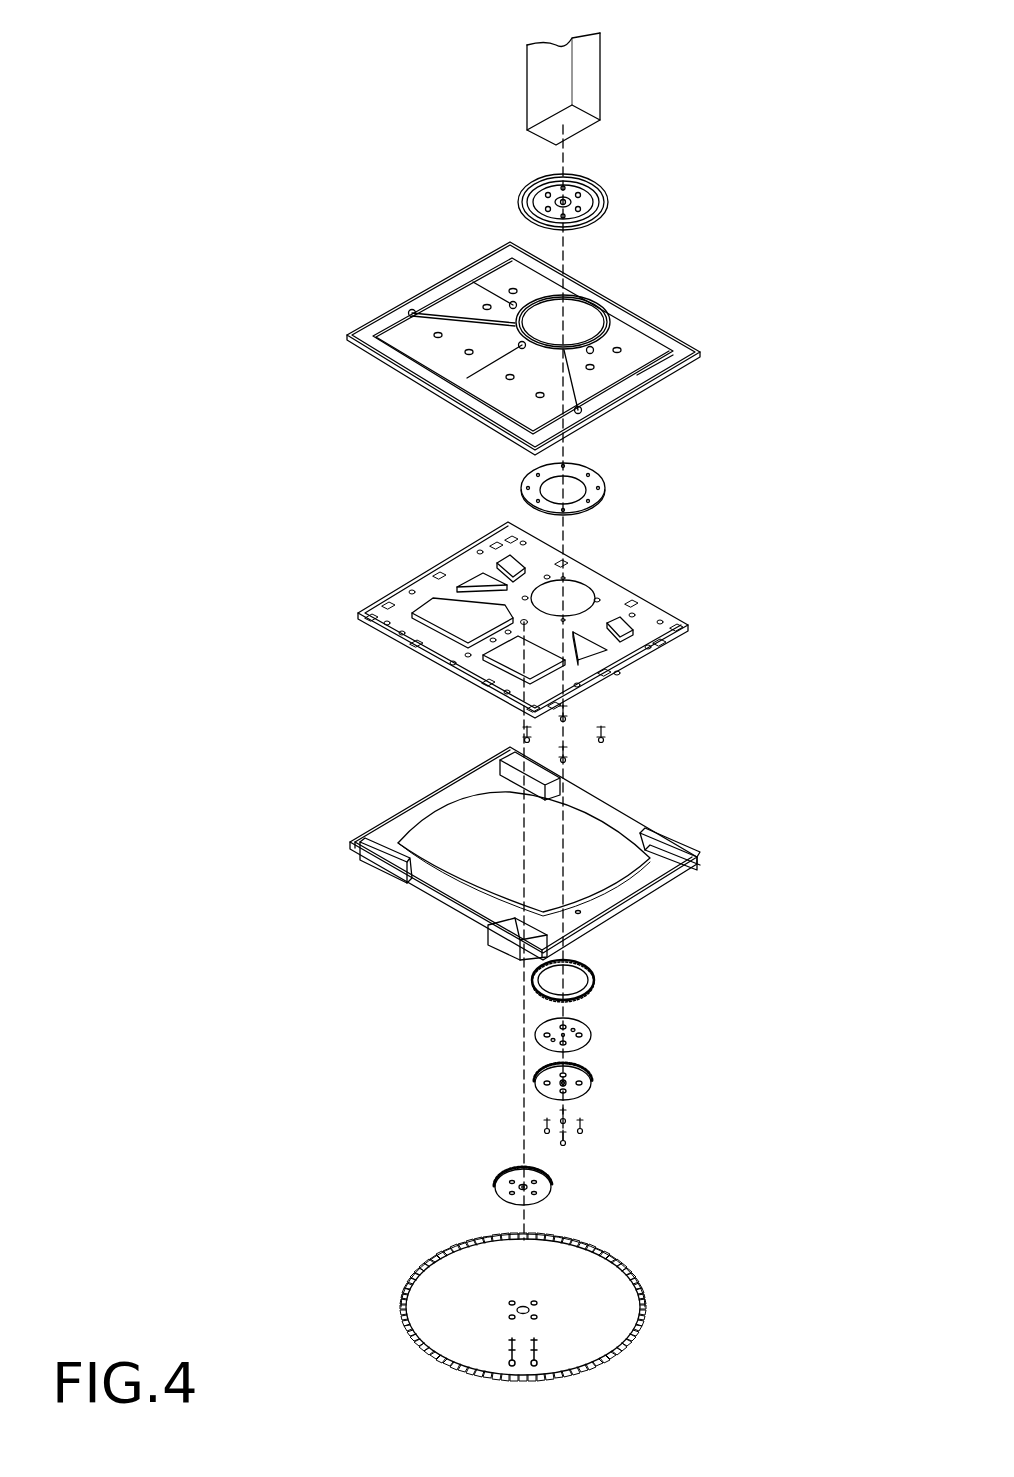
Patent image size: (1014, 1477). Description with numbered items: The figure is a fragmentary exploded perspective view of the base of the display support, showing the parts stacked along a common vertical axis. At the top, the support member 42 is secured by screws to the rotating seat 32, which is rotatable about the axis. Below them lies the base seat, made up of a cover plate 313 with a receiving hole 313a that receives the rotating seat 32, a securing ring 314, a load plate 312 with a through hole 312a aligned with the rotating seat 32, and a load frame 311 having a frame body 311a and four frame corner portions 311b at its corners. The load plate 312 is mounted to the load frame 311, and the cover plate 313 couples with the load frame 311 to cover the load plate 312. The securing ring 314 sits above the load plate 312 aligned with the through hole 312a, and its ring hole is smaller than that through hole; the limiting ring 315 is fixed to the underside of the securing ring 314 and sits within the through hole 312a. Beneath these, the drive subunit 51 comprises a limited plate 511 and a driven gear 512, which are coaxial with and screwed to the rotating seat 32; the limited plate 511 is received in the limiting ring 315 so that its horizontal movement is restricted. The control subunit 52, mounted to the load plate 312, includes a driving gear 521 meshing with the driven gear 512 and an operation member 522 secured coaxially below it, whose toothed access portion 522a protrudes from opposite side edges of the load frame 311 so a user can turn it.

The support member 42 is at (540, 88).
The rotating seat 32 is at (605, 200).
The cover plate 313 is at (521, 343).
The receiving hole 313a is at (580, 317).
The securing ring 314 is at (607, 488).
The load plate 312 is at (505, 617).
The through hole 312a is at (577, 592).
The load frame 311 is at (523, 829).
The frame body 311a is at (640, 892).
The frame corner portions 311b is at (512, 775).
The limiting ring 315 is at (598, 972).
The drive subunit 51 is at (645, 1082).
The limited plate 511 is at (593, 1035).
The driven gear 512 is at (593, 1081).
The control subunit 52 is at (550, 1266).
The driving gear 521 is at (500, 1183).
The operation member 522 is at (580, 1283).
The access portion 522a is at (620, 1262).